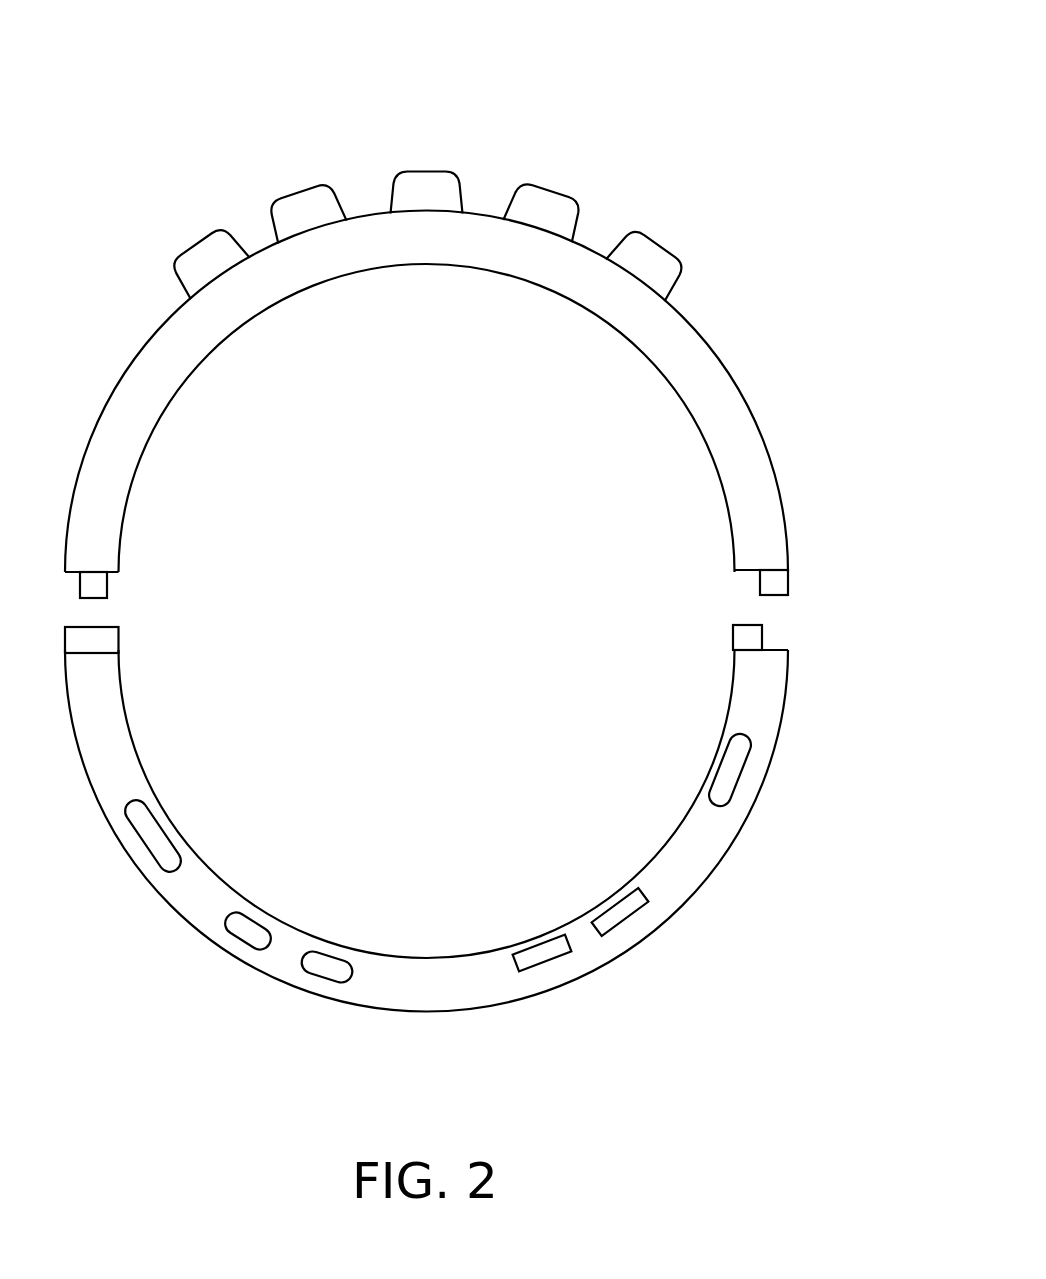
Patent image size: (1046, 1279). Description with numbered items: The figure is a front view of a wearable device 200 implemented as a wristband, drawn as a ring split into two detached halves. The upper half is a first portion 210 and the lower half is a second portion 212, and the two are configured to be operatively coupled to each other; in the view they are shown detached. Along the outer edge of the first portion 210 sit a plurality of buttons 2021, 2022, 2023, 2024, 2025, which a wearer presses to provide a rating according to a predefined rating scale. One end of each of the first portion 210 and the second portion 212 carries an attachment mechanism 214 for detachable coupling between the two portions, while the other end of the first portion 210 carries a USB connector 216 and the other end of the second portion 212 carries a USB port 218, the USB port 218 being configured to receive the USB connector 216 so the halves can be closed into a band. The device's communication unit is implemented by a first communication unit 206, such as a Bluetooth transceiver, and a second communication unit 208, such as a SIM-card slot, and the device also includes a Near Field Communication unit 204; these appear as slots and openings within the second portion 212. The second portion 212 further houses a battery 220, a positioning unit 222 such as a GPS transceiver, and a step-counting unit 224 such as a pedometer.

The wearable device 200 is at (463, 562).
The button 2021 is at (181, 234).
The button 2022 is at (285, 174).
The button 2023 is at (440, 139).
The button 2024 is at (572, 174).
The button 2025 is at (688, 240).
The Near Field Communication (NFC) unit 204 is at (558, 1006).
The first communication unit 206 is at (106, 863).
The second communication unit 208 is at (666, 955).
The first portion 210 is at (455, 392).
The second portion 212 is at (474, 831).
The attachment mechanism 214 is at (155, 637).
The USB connector 216 is at (434, 594).
The USB port 218 is at (816, 643).
The battery 220 is at (782, 790).
The positioning unit 222 is at (221, 984).
The step-counting unit 224 is at (324, 1027).